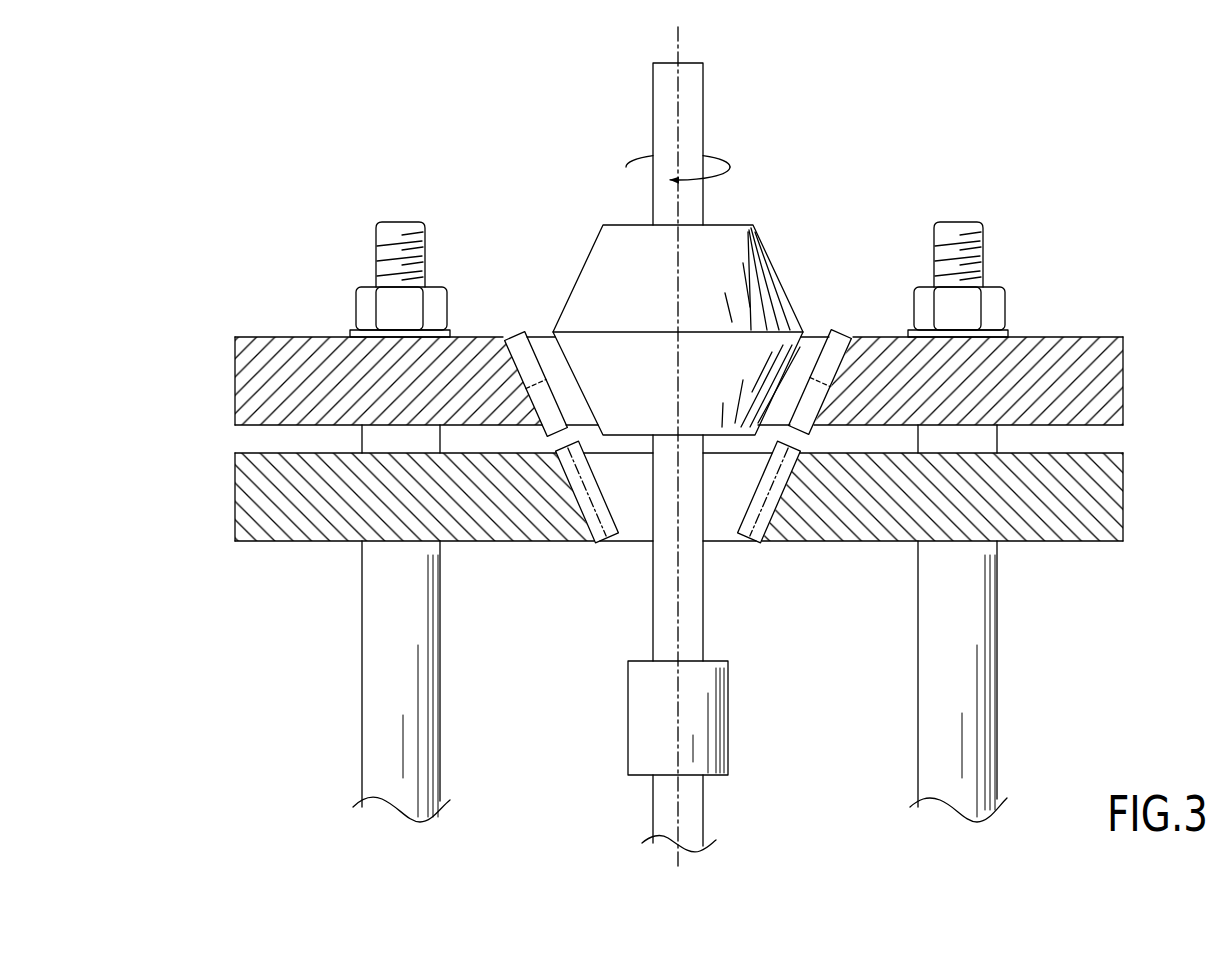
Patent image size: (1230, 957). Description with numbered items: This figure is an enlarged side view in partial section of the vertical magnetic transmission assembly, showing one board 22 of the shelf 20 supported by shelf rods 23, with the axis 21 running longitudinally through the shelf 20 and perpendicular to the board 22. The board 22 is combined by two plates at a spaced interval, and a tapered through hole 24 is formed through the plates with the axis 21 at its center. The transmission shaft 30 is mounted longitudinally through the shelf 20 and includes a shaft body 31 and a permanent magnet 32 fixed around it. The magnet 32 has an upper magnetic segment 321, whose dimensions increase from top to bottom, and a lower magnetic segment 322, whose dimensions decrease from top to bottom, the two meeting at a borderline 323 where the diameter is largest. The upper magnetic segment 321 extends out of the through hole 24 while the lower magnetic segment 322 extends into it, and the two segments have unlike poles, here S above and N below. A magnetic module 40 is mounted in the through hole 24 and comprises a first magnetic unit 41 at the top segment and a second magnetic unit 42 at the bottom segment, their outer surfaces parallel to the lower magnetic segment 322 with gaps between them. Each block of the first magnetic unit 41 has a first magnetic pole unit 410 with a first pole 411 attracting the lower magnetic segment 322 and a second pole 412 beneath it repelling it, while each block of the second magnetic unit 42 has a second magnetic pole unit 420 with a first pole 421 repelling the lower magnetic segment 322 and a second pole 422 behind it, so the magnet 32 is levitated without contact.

The shelf 20 is at (1083, 307).
The axis 21 is at (678, 44).
The board 22 is at (1128, 372).
The shelf rod 23 is at (982, 675).
The through hole 24 is at (721, 538).
The transmission shaft 30 is at (583, 216).
The shaft body 31 is at (692, 622).
The magnet 32 is at (733, 225).
The upper magnetic segment 321 is at (750, 232).
The lower magnetic segment 322 is at (760, 353).
The borderline 323 is at (752, 290).
The magnetic module 40 is at (854, 316).
The first magnetic unit 41 is at (844, 326).
The first magnetic pole unit 410 is at (568, 360).
The first pole 411 is at (541, 338).
The second pole 412 is at (557, 397).
The second magnetic unit 42 is at (668, 520).
The second magnetic pole unit 420 is at (610, 500).
The first pole 421 is at (586, 474).
The second pole 422 is at (597, 543).